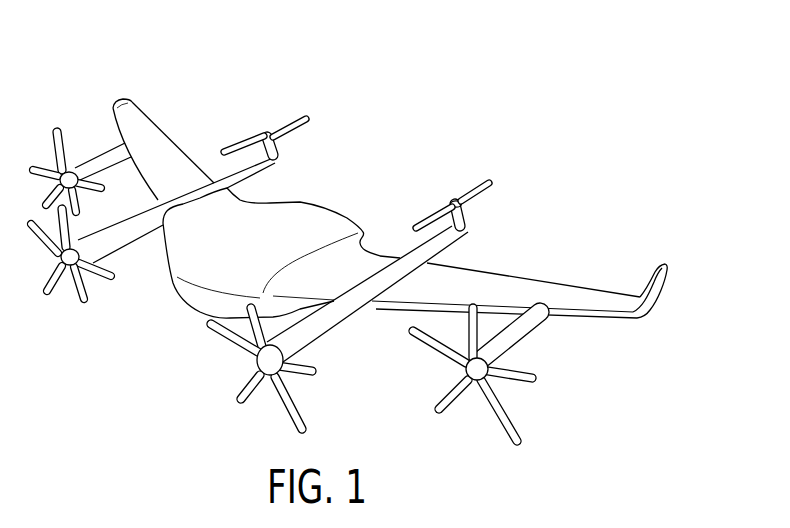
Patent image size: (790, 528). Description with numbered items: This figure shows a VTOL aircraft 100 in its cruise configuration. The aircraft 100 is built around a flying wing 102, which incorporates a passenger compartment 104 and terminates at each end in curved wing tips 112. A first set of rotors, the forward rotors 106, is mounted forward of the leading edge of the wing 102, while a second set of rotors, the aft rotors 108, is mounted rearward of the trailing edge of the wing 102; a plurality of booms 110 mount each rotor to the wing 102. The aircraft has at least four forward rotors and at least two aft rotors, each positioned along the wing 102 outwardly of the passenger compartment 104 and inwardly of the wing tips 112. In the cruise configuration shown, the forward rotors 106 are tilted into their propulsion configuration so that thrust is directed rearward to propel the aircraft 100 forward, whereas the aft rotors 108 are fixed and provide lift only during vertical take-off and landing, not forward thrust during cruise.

The VTOL aircraft 100 is at (341, 96).
The flying wing 102 is at (495, 293).
The passenger compartment 104 is at (336, 224).
The forward rotors 106 is at (533, 378).
The aft rotors 108 is at (497, 186).
The booms 110 is at (343, 321).
The curved wing tips 112 is at (121, 101).